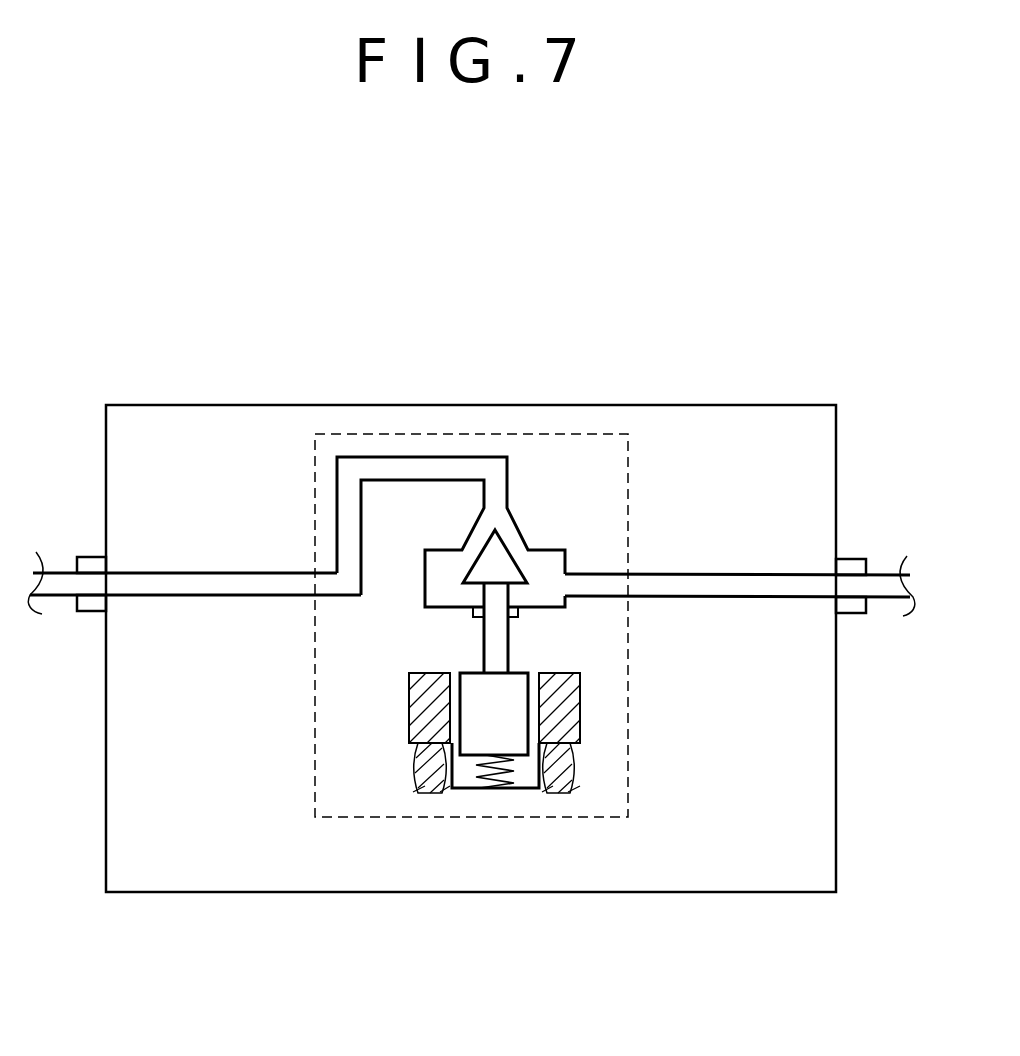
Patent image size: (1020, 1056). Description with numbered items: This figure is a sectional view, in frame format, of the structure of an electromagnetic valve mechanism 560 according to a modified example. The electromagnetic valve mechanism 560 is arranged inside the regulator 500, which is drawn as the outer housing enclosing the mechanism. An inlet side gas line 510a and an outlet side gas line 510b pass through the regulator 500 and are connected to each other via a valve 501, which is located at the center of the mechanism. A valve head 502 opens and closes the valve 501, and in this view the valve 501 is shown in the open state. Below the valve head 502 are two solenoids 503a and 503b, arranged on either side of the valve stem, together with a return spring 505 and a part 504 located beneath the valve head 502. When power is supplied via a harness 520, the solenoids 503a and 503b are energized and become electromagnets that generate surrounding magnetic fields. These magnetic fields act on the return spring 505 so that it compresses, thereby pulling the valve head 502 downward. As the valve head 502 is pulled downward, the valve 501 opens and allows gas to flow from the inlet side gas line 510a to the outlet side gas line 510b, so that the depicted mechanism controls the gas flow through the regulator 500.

The regulator 500 is at (583, 405).
The electromagnetic valve mechanism 560 is at (628, 468).
The valve 501 is at (518, 530).
The valve head 502 is at (483, 643).
The solenoid 503a is at (580, 706).
The solenoid 503b is at (408, 705).
The spring retainer cup 504 is at (463, 788).
The return spring 505 is at (507, 777).
The inlet side gas line 510a is at (712, 575).
The outlet side gas line 510b is at (219, 573).
The harness 520 is at (420, 765).